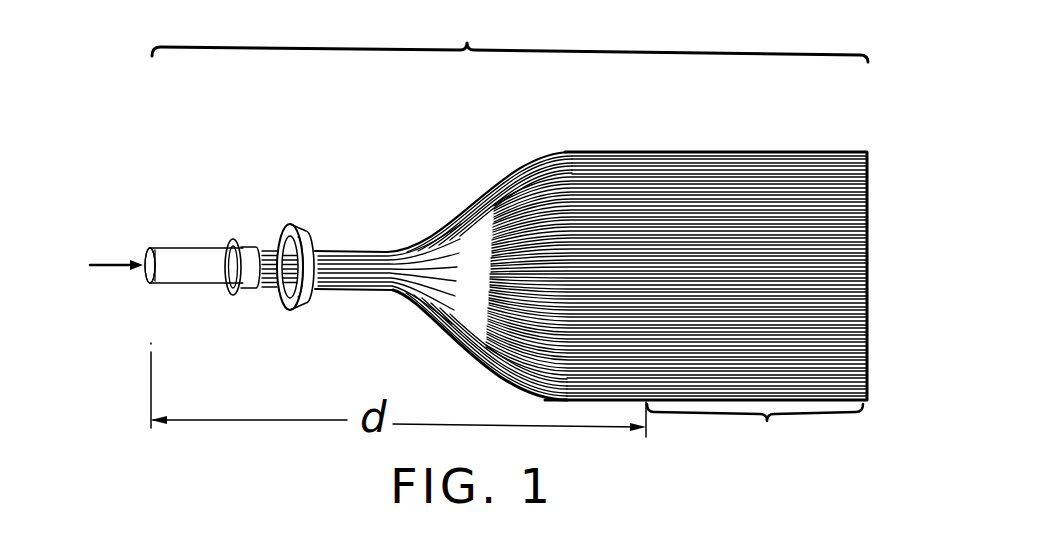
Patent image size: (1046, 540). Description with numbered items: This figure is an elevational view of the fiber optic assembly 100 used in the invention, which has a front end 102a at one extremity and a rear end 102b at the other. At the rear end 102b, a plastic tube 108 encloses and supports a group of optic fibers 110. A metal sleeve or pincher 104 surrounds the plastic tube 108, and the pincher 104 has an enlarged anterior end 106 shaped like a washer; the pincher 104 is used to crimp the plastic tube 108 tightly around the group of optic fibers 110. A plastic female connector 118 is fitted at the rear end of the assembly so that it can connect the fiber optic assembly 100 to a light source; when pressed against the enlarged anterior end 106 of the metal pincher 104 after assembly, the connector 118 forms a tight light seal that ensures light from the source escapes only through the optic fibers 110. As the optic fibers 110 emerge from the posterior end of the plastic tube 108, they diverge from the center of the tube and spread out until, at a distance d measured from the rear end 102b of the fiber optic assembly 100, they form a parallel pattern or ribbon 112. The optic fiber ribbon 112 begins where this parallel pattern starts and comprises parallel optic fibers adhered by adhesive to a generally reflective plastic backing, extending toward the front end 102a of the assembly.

The fiber optic assembly 100 is at (510, 38).
The front end 102a is at (880, 162).
The rear end 102b is at (139, 240).
The metal sleeve or pincher 104 is at (257, 222).
The enlarged anterior end 106 is at (236, 300).
The plastic tube 108 is at (173, 286).
The group of optic fibers 110 is at (389, 240).
The optic fiber ribbon 112 is at (755, 427).
The plastic female connector 118 is at (300, 233).